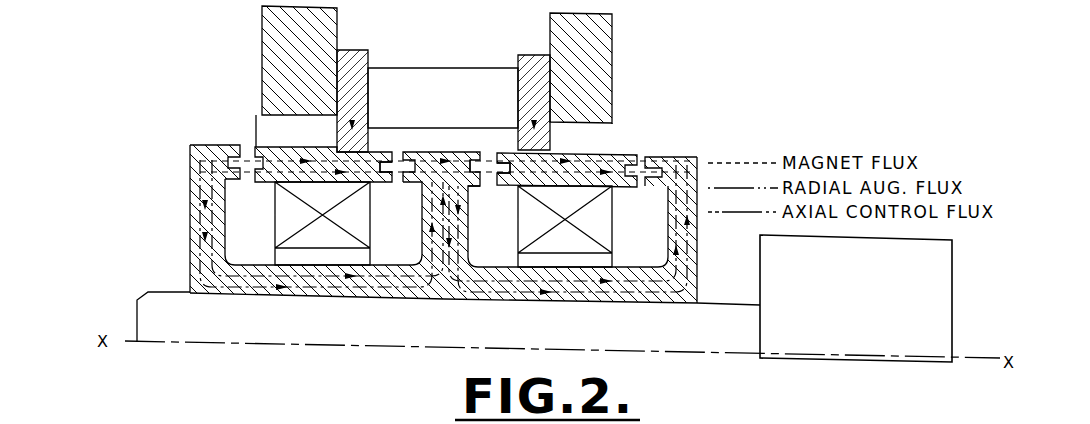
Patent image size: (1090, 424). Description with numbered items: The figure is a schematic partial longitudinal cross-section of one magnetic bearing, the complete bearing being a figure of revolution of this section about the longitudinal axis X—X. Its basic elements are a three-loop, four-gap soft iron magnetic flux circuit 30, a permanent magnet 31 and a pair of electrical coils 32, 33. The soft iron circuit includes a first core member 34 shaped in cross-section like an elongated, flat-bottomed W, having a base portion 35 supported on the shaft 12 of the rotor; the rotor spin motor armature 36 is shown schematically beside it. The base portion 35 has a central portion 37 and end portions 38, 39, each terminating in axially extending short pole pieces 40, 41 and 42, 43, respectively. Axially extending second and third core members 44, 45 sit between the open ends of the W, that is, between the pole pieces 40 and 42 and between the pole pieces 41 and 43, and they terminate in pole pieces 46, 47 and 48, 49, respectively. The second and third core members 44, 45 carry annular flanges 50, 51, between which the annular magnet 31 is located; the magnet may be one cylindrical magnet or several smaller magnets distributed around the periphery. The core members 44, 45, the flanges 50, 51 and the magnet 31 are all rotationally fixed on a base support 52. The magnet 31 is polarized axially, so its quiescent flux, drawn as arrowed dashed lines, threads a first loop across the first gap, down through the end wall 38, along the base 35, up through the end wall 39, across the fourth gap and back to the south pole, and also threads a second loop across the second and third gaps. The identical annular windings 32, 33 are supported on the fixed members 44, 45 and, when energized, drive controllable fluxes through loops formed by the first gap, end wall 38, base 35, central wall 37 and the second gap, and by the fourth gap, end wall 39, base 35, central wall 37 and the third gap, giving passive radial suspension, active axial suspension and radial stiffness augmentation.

The shaft 12 is at (143, 300).
The soft iron magnetic flux circuit 30 is at (434, 167).
The permanent magnet 31 is at (440, 60).
The electrical coil 32 is at (371, 225).
The electrical coil 33 is at (612, 233).
The first core member 34 is at (698, 252).
The base portion 35 is at (634, 306).
The rotor spin motor armature 36 is at (952, 293).
The central portion 37 is at (469, 222).
The end portion 38 is at (190, 205).
The end portion 39 is at (699, 158).
The pole piece 40 is at (410, 152).
The pole piece 41 is at (478, 153).
The pole piece 42 is at (237, 144).
The pole piece 43 is at (660, 157).
The second core member 44 is at (292, 147).
The third core member 45 is at (582, 153).
The pole piece 46 is at (256, 146).
The pole piece 47 is at (388, 152).
The pole piece 48 is at (493, 153).
The pole piece 49 is at (635, 153).
The annular flange 50 is at (350, 50).
The annular flange 51 is at (530, 53).
The base support 52 is at (278, 36).